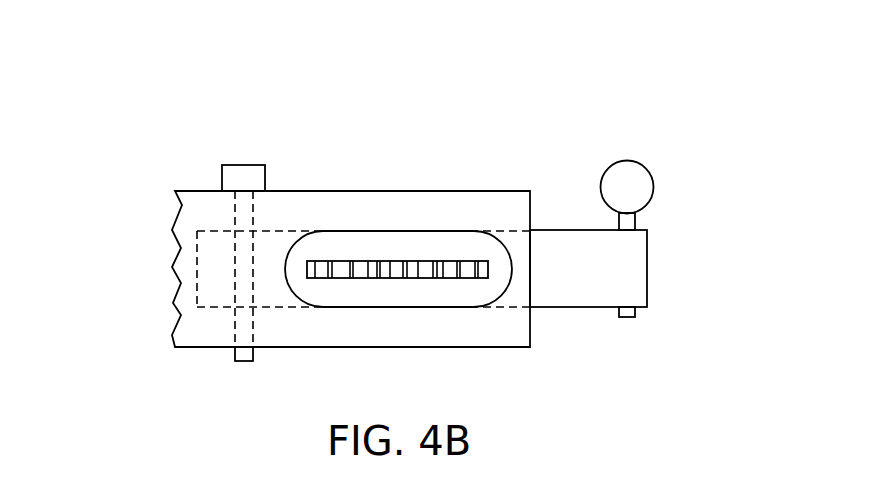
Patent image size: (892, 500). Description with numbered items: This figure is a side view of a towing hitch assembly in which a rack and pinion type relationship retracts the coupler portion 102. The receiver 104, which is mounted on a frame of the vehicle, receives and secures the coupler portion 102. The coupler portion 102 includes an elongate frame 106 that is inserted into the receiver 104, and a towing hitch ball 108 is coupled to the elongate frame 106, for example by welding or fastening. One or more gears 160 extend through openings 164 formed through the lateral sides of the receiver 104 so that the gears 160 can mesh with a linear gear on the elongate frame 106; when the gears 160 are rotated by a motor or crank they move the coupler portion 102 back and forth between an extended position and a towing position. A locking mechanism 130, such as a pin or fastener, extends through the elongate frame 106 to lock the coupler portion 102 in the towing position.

The coupler portion 102 is at (651, 235).
The receiver 104 is at (465, 191).
The elongate frame 106 is at (588, 308).
The towing hitch ball 108 is at (627, 160).
The locking mechanism 130 is at (267, 205).
The gears 160 is at (395, 261).
The openings 164 is at (326, 231).